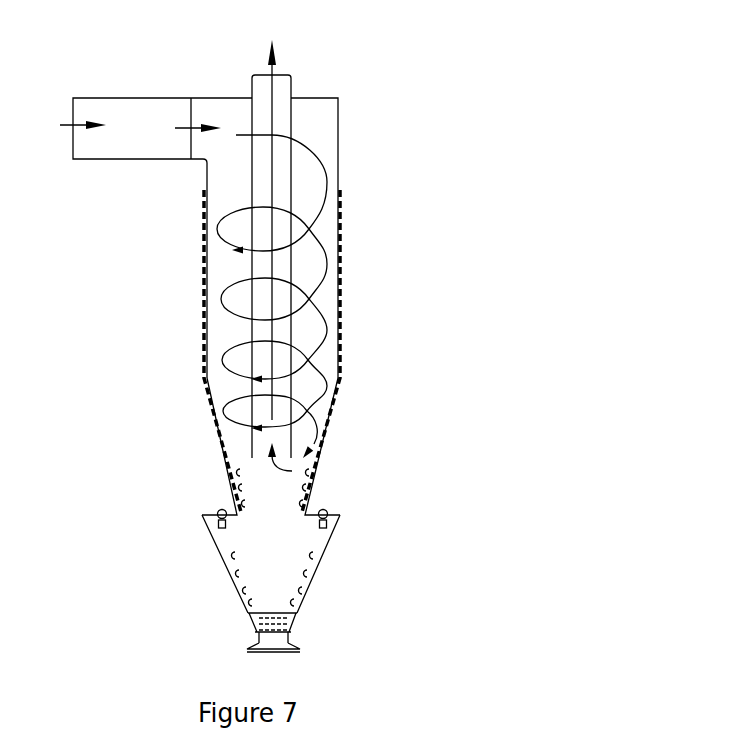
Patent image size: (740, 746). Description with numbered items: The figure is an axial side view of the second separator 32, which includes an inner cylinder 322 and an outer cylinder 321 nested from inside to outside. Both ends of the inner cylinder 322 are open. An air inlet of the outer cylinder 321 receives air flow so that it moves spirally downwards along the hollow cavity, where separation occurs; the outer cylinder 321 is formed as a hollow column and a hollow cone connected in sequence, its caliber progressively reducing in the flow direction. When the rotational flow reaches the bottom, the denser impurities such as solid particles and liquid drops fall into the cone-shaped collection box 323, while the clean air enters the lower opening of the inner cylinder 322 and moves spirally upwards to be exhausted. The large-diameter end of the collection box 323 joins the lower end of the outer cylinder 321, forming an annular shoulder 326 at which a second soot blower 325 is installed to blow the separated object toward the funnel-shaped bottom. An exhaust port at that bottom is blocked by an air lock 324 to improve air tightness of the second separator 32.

The second separator 32 is at (120, 280).
The outer cylinder 321 is at (338, 168).
The inner cylinder 322 is at (290, 122).
The collection box 323 is at (316, 570).
The air lock 324 is at (293, 636).
The second soot blower 325 is at (322, 513).
The annular shoulder 326 is at (208, 513).